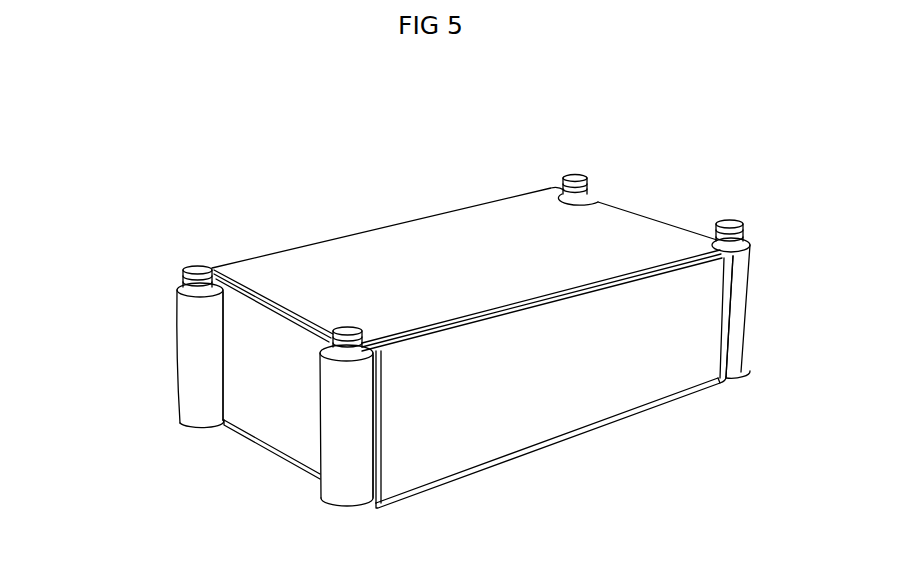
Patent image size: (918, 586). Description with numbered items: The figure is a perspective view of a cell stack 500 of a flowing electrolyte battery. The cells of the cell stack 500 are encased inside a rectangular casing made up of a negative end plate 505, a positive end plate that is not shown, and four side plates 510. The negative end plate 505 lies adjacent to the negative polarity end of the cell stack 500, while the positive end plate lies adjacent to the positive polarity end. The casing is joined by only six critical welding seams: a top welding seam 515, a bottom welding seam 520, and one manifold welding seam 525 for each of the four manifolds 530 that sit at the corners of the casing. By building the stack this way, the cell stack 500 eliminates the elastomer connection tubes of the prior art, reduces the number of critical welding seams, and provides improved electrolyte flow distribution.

The cell stack 500 is at (198, 151).
The negative end plate 505 is at (412, 248).
The side plates 510 is at (263, 393).
The top welding seam 515 is at (655, 263).
The bottom welding seam 520 is at (520, 457).
The manifold welding seam 525 is at (222, 320).
The manifolds 530 is at (588, 178).